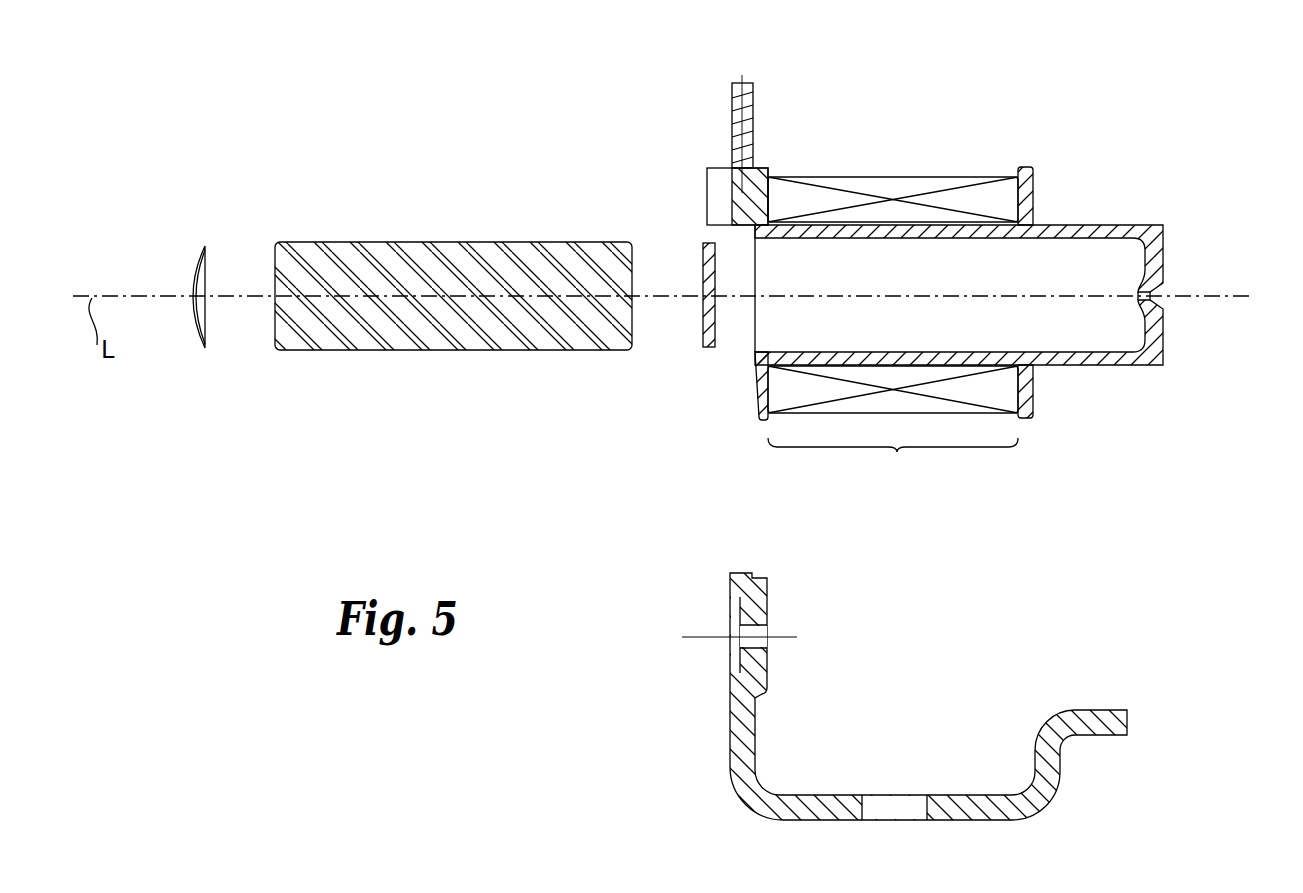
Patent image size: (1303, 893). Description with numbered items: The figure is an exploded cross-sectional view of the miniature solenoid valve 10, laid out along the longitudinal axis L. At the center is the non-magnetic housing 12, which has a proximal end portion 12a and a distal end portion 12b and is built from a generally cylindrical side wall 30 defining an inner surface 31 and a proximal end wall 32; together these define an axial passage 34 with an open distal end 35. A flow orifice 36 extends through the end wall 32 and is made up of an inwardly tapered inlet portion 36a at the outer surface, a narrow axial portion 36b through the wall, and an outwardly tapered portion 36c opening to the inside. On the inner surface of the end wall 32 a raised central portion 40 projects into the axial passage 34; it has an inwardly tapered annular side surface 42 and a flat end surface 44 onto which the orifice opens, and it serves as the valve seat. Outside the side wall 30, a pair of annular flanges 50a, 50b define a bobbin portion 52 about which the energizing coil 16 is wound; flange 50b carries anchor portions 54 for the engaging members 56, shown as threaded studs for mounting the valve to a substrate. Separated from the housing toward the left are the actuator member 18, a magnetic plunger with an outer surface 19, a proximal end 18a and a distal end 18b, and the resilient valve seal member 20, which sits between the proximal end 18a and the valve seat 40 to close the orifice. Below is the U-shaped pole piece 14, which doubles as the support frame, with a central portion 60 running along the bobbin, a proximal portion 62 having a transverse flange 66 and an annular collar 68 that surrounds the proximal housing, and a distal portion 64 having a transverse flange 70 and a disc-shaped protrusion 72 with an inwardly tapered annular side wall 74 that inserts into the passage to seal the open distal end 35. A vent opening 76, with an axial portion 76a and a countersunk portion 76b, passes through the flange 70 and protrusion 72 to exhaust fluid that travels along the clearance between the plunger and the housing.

The solenoid valve 10 is at (245, 132).
The housing 12 is at (1052, 154).
The proximal end portion 12a is at (1178, 215).
The distal end portion 12b is at (733, 380).
The pole piece or yoke member 14 is at (892, 729).
The energizing coil 16 is at (898, 173).
The actuator member 18 is at (420, 221).
The proximal end 18a is at (630, 229).
The distal end 18b is at (272, 227).
The outer surface 19 is at (377, 351).
The valve seal member 20 is at (695, 234).
The side wall 30 is at (1063, 228).
The inner surface 31 is at (1062, 346).
The proximal end wall 32 is at (190, 236).
The axial passage 34 is at (942, 281).
The open distal end 35 is at (745, 337).
The flow orifice 36 is at (1184, 284).
The inwardly tapered inlet portion 36a is at (1162, 305).
The axial portion 36b is at (1170, 287).
The outwardly tapered portion 36c is at (1140, 305).
The raised central portion or protrusion 40 is at (1127, 300).
The inwardly tapered annular side surface 42 is at (1146, 240).
The flat end surface 44 is at (1140, 290).
The annular flange 50a is at (1030, 390).
The annular flange 50b is at (752, 403).
The bobbin portion 52 is at (893, 460).
The anchor portion 54 is at (712, 175).
The engaging member 56 is at (738, 96).
The central portion 60 is at (972, 816).
The proximal portion 62 is at (1066, 752).
The distal portion 64 is at (738, 785).
The transverse flange 66 is at (1045, 755).
The annular collar 68 is at (1100, 730).
The transverse flange 70 is at (740, 745).
The cap member or disc-shaped protrusion 72 is at (768, 670).
The inwardly tapered annular side wall 74 is at (760, 697).
The vent opening 76 is at (717, 668).
The axial portion 76a is at (755, 622).
The countersunk portion 76b is at (730, 582).